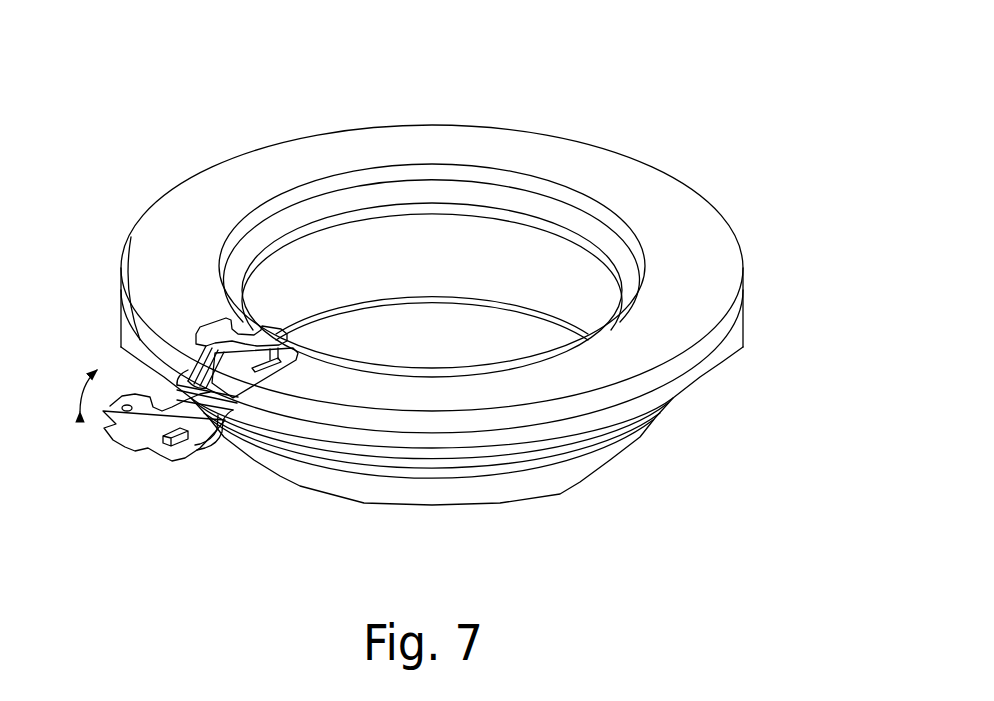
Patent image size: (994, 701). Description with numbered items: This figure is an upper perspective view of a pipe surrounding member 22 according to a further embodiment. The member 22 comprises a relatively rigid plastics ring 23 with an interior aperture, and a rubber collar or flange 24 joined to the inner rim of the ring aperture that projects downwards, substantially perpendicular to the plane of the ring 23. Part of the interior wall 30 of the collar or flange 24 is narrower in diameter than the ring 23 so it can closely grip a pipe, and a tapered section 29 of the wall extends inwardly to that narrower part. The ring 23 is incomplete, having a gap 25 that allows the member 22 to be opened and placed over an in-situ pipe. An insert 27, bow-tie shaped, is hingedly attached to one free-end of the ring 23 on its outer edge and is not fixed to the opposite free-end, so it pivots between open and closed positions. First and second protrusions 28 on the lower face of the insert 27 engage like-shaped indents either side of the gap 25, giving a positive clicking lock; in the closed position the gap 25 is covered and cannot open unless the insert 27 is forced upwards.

The pipe surrounding member 22 is at (148, 98).
The ring 23 is at (692, 196).
The collar or flange 24 is at (363, 492).
The gap 25 is at (232, 358).
The insert 27 is at (130, 432).
The protrusions 28 is at (170, 438).
The tapered section 29 is at (463, 188).
The interior wall 30 is at (537, 241).